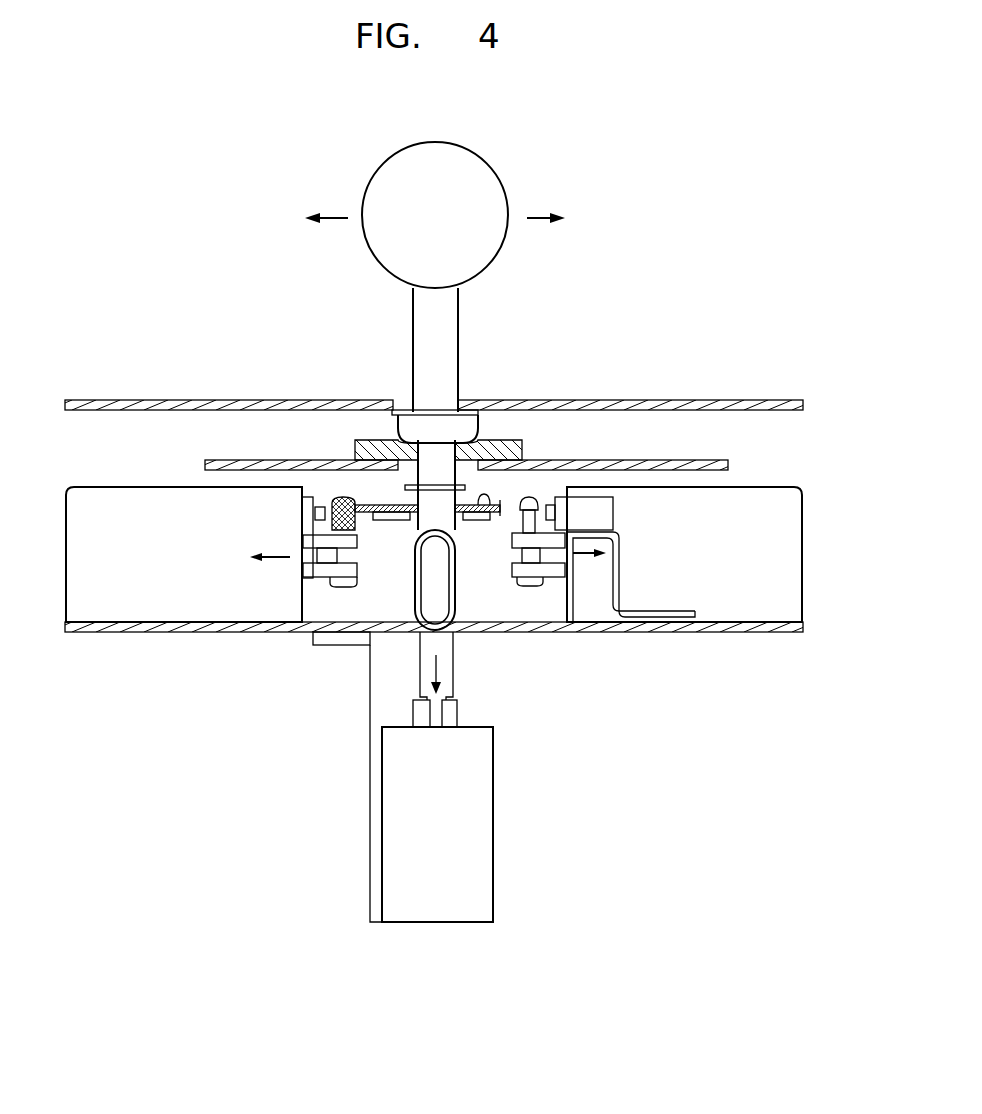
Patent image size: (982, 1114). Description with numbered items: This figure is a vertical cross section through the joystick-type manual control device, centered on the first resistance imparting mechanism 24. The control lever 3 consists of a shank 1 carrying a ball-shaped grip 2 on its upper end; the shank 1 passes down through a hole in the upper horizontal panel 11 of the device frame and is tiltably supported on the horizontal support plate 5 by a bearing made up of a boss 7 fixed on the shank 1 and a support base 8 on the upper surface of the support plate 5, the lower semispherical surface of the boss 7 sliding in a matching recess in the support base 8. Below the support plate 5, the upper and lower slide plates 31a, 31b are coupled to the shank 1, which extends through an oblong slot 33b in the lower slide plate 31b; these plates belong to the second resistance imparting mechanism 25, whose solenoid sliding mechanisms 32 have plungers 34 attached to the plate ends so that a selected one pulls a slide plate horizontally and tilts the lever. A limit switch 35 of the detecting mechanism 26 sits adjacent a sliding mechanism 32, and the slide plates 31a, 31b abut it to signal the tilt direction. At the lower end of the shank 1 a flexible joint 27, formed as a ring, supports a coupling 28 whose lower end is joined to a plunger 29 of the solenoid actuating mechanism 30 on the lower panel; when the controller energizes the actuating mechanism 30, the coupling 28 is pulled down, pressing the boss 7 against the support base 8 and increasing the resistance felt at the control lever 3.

The shank 1 is at (435, 272).
The ball-shaped grip 2 is at (382, 166).
The control lever 3 is at (470, 338).
The horizontal support plate 5 is at (622, 470).
The boss 7 is at (437, 432).
The support base 8 is at (380, 441).
The upper horizontal panel 11 is at (180, 400).
The first resistance imparting mechanism 24 is at (502, 778).
The second resistance imparting mechanism 25 is at (786, 475).
The detecting mechanism 26 is at (632, 520).
The flexible joint 27 is at (443, 583).
The coupling 28 is at (425, 668).
The plunger 29 is at (463, 713).
The actuating mechanism 30 is at (425, 907).
The upper slide plate 31a is at (490, 522).
The lower slide plate 31b is at (381, 522).
The sliding mechanism 32 is at (118, 497).
The oblong slot 33b is at (403, 502).
The plunger 34 is at (300, 580).
The limit switch 35 is at (575, 497).